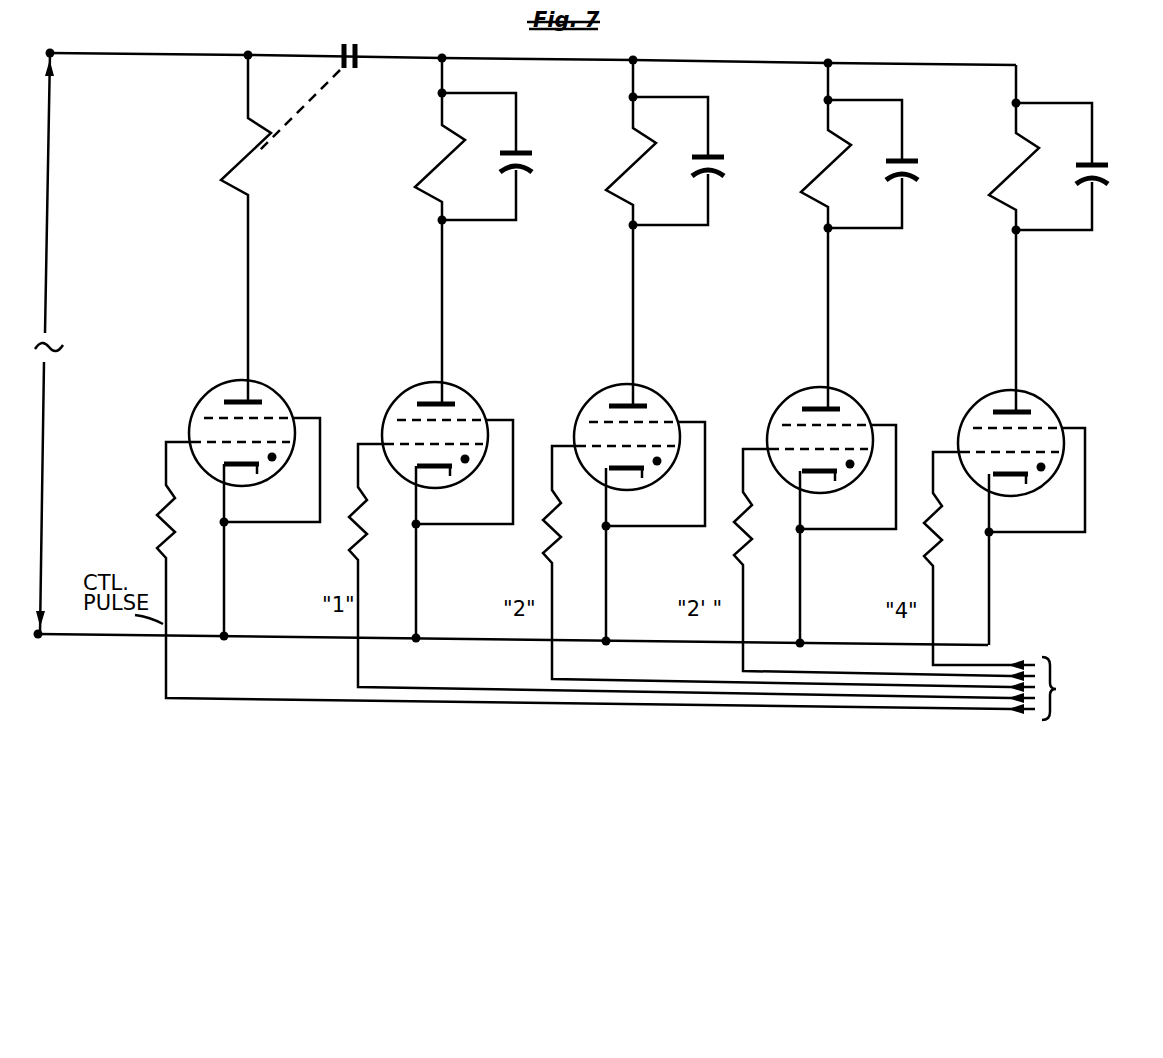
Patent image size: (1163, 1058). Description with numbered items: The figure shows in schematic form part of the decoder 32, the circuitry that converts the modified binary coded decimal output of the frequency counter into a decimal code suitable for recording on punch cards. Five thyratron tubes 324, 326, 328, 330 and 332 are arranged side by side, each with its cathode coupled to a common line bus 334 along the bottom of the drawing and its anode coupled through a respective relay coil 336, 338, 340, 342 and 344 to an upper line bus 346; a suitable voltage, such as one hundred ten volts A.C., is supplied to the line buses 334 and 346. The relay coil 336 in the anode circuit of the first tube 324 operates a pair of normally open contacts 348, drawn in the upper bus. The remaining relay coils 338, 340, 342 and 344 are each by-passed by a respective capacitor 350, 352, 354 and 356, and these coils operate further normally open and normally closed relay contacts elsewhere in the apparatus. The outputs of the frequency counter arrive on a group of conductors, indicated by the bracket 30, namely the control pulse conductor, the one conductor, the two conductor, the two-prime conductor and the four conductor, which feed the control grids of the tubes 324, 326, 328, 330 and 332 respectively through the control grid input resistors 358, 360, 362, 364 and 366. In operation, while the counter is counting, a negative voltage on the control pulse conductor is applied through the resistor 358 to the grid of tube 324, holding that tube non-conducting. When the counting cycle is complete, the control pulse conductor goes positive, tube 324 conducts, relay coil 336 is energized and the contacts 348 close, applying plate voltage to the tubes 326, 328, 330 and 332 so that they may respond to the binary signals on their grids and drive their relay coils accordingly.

The decoder 32 is at (1047, 318).
The inputs from frequency counter 30 is at (1085, 686).
The thyratron tube 324 is at (277, 391).
The thyratron tube 326 is at (488, 380).
The thyratron tube 328 is at (663, 395).
The thyratron tube 330 is at (860, 380).
The thyratron tube 332 is at (1042, 398).
The line bus 334 is at (82, 640).
The relay coil 336 is at (250, 160).
The relay coil 338 is at (430, 173).
The relay coil 340 is at (622, 176).
The relay coil 342 is at (815, 184).
The relay coil 344 is at (1000, 186).
The line bus 346 is at (188, 53).
The normally open contacts 348 is at (357, 52).
The capacitor 350 is at (533, 163).
The capacitor 352 is at (718, 168).
The capacitor 354 is at (912, 172).
The capacitor 356 is at (1105, 168).
The control grid input resistor 358 is at (152, 517).
The control grid input resistor 360 is at (350, 533).
The control grid input resistor 362 is at (535, 526).
The control grid input resistor 364 is at (733, 540).
The control grid input resistor 366 is at (917, 555).